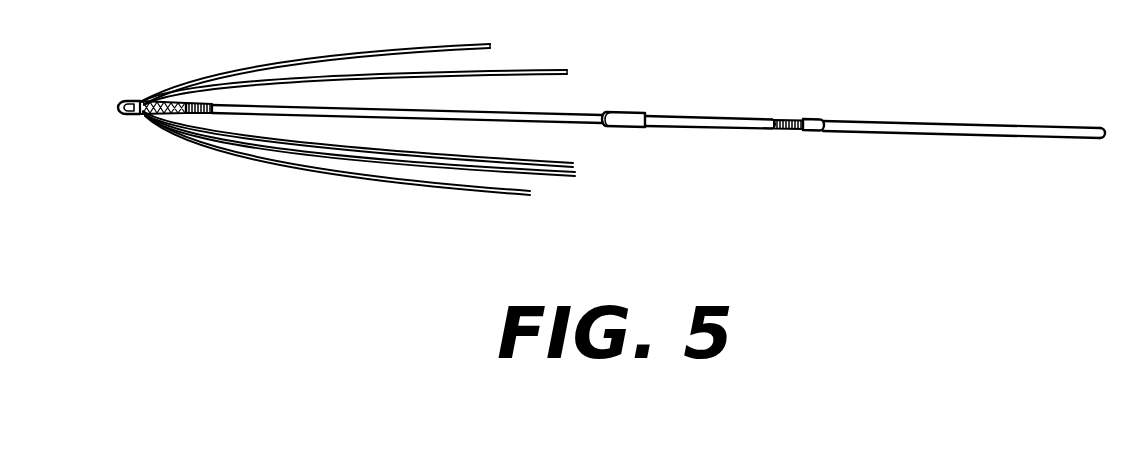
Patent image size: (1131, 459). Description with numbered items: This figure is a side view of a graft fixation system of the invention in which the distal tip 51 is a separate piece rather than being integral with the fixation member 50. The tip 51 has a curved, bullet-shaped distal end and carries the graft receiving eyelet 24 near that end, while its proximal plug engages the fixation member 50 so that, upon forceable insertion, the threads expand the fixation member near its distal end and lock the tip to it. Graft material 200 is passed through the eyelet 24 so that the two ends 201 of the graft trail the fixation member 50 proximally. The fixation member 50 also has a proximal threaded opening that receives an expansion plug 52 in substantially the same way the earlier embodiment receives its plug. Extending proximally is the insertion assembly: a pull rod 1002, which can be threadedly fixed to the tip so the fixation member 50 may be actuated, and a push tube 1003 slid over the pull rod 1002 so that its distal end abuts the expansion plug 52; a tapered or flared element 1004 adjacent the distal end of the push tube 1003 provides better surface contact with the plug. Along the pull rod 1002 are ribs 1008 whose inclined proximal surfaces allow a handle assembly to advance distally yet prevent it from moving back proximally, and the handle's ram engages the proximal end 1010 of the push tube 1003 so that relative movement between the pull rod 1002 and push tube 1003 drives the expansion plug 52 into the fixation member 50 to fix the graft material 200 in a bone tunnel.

The eyelet 24 is at (124, 100).
The distal tip 51 is at (137, 97).
The fixation member 50 is at (162, 117).
The expansion plug 52 is at (200, 122).
The graft material 200 is at (208, 103).
The ends of the graft 201 is at (568, 72).
The tapered or flared element 1004 is at (216, 110).
The push tube 1003 is at (520, 114).
The pull rod 1002 is at (748, 118).
The proximal end of push tube 1010 is at (632, 128).
The ribs 1008 is at (790, 130).